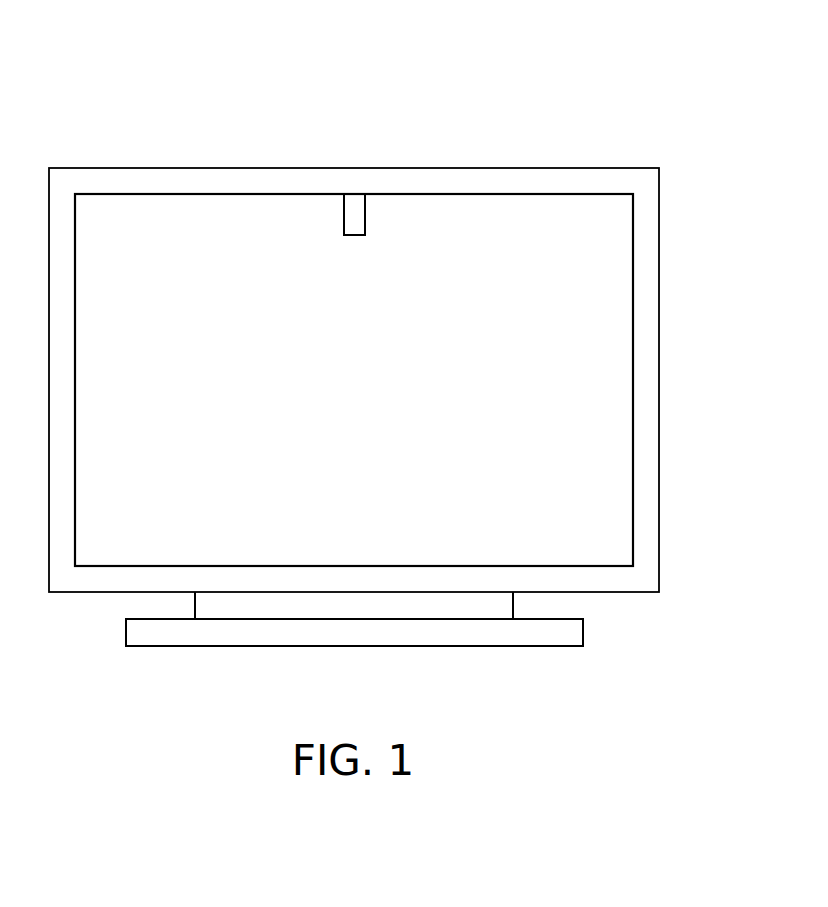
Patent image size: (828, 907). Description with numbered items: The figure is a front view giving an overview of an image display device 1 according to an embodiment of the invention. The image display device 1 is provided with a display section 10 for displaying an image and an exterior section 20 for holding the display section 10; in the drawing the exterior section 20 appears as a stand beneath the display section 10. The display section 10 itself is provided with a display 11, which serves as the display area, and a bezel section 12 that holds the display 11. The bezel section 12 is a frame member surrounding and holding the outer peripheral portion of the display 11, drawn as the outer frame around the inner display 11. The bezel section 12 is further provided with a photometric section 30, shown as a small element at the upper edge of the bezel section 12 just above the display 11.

The image display device 1 is at (377, 330).
The display section 10 is at (354, 330).
The display 11 is at (144, 211).
The bezel section 12 is at (272, 181).
The exterior section 20 is at (505, 603).
The photometric section 30 is at (356, 211).